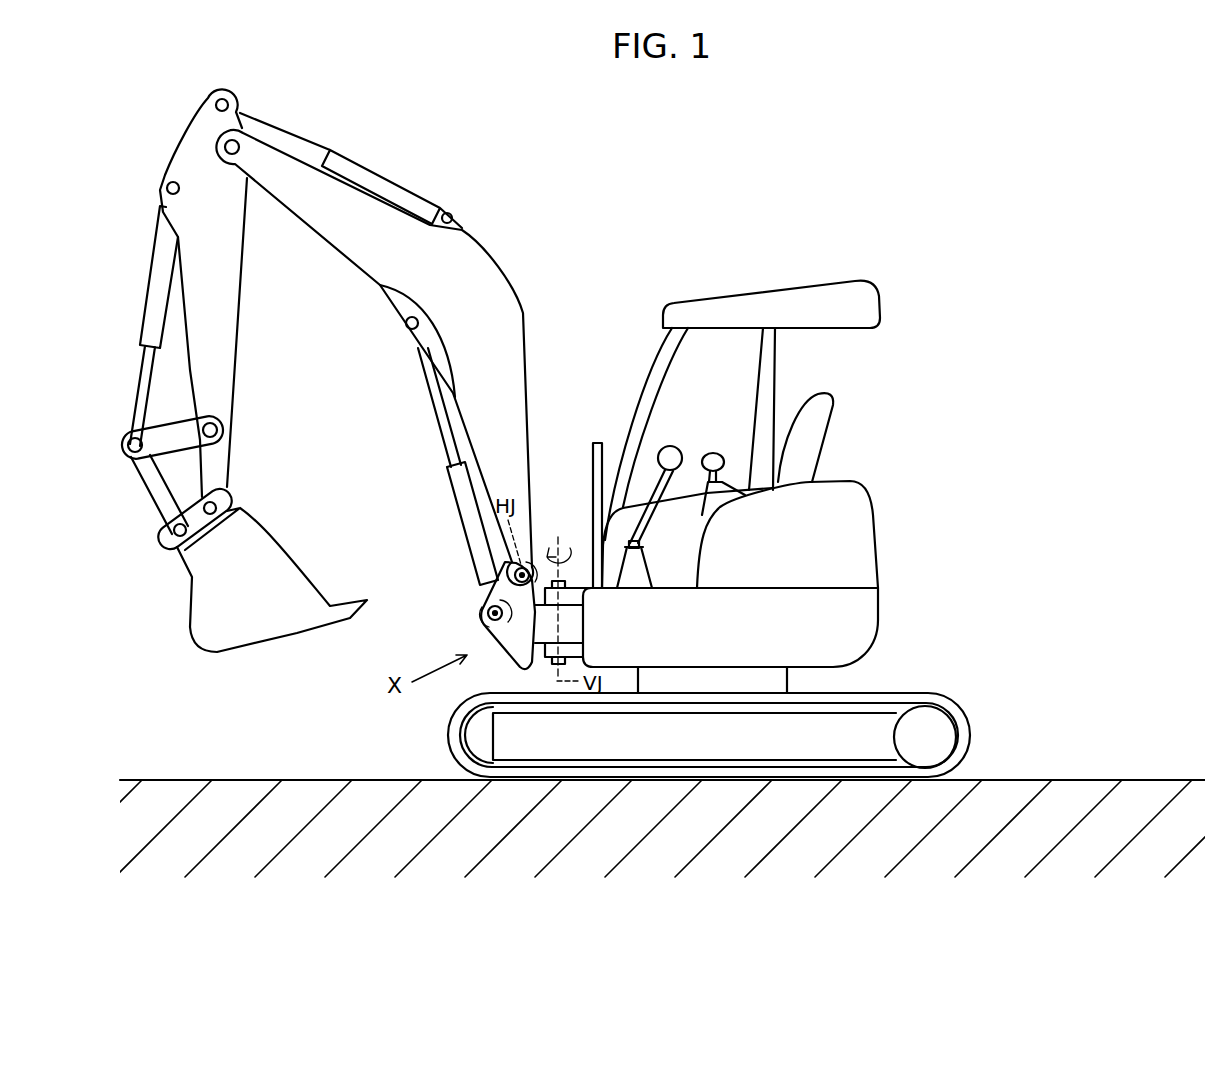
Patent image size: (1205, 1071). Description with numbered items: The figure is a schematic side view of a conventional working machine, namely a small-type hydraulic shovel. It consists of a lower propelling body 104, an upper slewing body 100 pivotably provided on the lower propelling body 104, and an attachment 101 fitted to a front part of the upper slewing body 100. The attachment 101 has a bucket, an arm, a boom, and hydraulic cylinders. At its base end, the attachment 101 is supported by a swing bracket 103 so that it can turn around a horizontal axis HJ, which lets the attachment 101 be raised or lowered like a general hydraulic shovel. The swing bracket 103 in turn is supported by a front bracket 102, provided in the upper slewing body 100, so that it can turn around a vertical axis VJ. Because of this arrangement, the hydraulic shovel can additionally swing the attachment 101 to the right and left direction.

The upper slewing body 100 is at (853, 548).
The attachment 101 is at (503, 302).
The front bracket 102 is at (573, 595).
The swing bracket 103 is at (490, 594).
The lower propelling body 104 is at (978, 694).